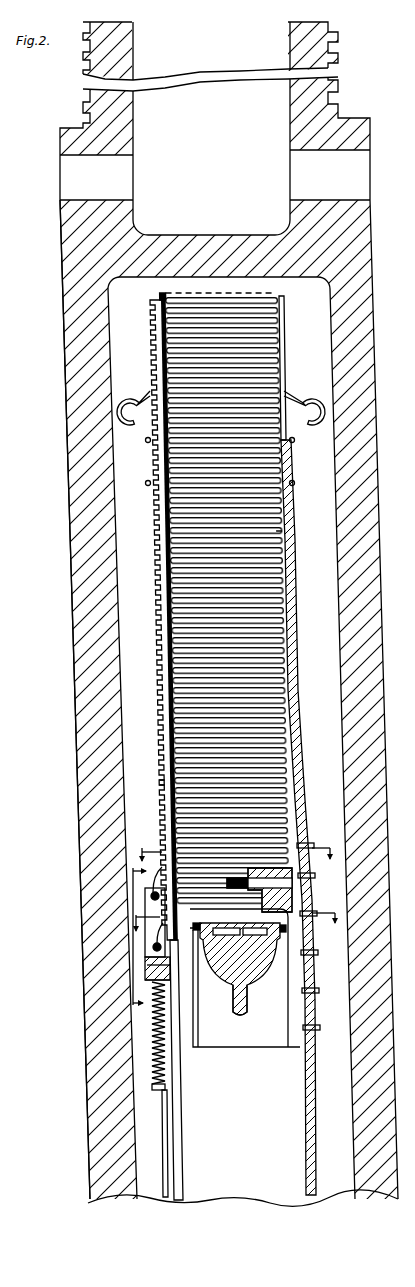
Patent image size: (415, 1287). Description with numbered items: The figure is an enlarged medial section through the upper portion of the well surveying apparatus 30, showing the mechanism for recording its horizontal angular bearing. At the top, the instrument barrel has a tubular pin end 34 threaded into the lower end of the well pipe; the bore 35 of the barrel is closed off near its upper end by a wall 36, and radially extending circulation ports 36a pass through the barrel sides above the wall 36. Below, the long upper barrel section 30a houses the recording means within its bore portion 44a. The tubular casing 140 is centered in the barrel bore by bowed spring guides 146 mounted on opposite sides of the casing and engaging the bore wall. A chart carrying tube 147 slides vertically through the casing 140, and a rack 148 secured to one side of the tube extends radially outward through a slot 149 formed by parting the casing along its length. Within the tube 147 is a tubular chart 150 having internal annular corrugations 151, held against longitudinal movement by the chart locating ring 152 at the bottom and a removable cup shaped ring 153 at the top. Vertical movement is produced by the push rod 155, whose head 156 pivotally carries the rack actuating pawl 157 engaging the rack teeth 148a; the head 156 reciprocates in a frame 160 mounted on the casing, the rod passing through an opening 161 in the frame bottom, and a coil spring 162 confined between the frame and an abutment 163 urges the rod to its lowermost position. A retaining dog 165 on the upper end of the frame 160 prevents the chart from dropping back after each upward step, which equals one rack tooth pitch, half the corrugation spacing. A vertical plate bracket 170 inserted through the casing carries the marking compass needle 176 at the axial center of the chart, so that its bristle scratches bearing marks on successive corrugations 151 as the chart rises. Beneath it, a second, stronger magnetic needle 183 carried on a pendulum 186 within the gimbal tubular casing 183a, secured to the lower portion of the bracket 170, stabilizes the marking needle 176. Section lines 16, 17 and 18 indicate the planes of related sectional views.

The surveying apparatus 30 is at (372, 546).
The upper barrel section 30a is at (81, 598).
The tubular pin end 34 is at (293, 100).
The bore 35 is at (122, 508).
The wall 36 is at (183, 235).
The circulation ports 36a is at (215, 175).
The bore portion 44a is at (330, 505).
The tubular casing 140 is at (294, 659).
The bowed spring guides 146 is at (125, 394).
The chart carrying tube 147 is at (294, 693).
The rack 148 is at (148, 584).
The rack teeth 148a is at (151, 787).
The slot 149 is at (179, 1070).
The tubular chart 150 is at (268, 603).
The internal annular corrugations 151 is at (271, 538).
The chart locating ring 152 is at (190, 913).
The cup shaped ring 153 is at (258, 293).
The push rod 155 is at (168, 1130).
The head 156 is at (147, 965).
The rack actuating pawl 157 is at (153, 946).
The frame 160 is at (147, 972).
The opening 161 is at (150, 985).
The coil spring 162 is at (158, 1045).
The abutment 163 is at (157, 1088).
The retaining dog 165 is at (152, 894).
The vertical plate bracket 170 is at (304, 978).
The marking compass needle 176 is at (294, 889).
The magnetic needle 183 is at (207, 643).
The tubular casing 183a is at (267, 1047).
The pendulum 186 is at (225, 1000).
The section line 16- 16 is at (148, 943).
The section line 17- 17 is at (234, 847).
The section line 18- 18 is at (235, 913).